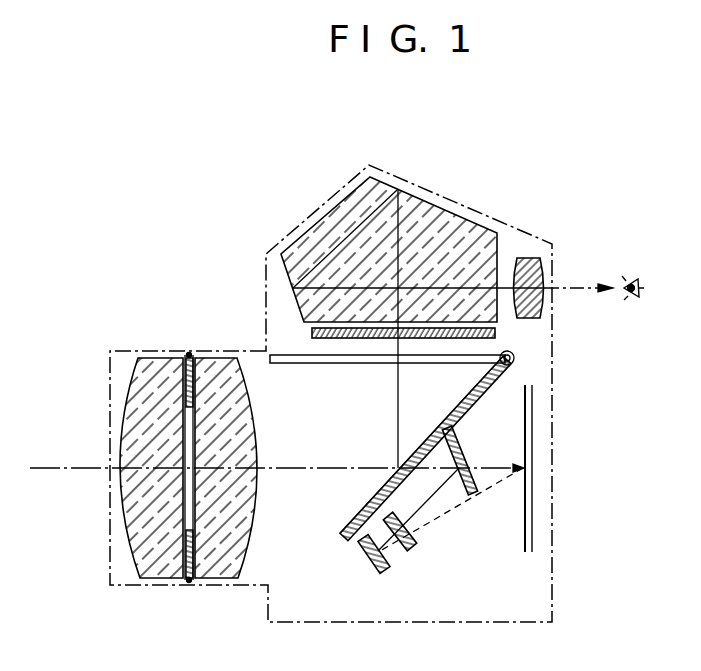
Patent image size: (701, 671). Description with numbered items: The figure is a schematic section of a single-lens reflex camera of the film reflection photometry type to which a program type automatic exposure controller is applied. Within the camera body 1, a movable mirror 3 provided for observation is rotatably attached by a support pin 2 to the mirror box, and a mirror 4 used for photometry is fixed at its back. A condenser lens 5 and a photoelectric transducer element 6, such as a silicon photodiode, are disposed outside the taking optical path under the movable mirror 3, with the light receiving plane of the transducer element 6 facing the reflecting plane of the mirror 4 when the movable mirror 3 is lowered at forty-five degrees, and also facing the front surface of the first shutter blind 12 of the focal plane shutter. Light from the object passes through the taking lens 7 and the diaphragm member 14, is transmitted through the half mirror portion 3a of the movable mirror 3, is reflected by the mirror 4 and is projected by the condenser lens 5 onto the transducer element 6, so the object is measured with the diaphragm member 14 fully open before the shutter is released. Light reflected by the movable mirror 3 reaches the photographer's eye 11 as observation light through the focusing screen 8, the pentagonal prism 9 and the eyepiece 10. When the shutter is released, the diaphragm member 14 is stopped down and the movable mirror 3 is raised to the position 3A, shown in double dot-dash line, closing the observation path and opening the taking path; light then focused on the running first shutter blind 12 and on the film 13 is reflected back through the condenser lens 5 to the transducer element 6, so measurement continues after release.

The camera body 1 is at (457, 193).
The support pin 2 is at (514, 355).
The movable mirror 3 is at (468, 396).
The half mirror portion 3a is at (432, 441).
The raised position of movable mirror 3A is at (327, 365).
The mirror 4 is at (463, 455).
The condenser lens 5 is at (415, 542).
The photoelectric transducer element 6 is at (388, 572).
The taking lens 7 is at (252, 443).
The focusing screen 8 is at (312, 338).
The pentagonal prism 9 is at (318, 233).
The eyepiece 10 is at (538, 280).
The photographer's eye 11 is at (635, 283).
The first shutter blind 12 is at (525, 517).
The film 13 is at (535, 552).
The diaphragm member 14 is at (190, 355).